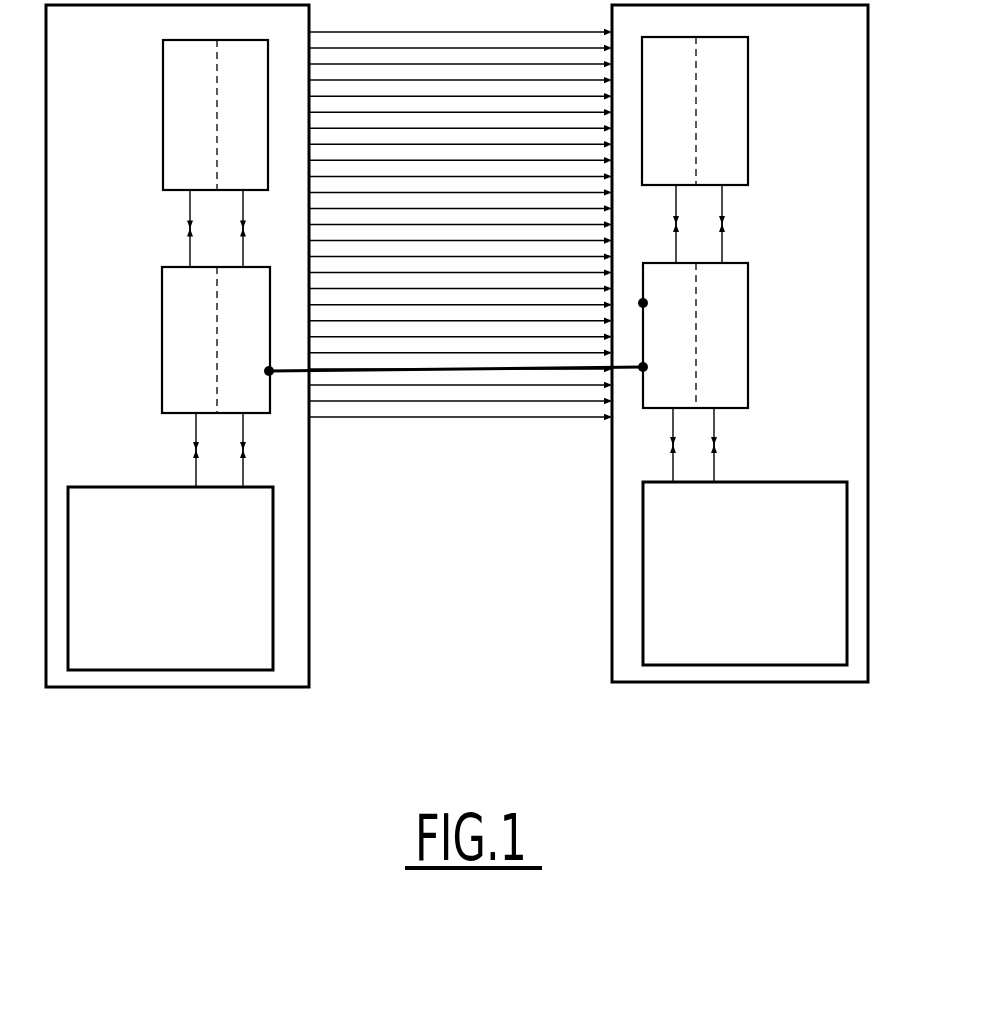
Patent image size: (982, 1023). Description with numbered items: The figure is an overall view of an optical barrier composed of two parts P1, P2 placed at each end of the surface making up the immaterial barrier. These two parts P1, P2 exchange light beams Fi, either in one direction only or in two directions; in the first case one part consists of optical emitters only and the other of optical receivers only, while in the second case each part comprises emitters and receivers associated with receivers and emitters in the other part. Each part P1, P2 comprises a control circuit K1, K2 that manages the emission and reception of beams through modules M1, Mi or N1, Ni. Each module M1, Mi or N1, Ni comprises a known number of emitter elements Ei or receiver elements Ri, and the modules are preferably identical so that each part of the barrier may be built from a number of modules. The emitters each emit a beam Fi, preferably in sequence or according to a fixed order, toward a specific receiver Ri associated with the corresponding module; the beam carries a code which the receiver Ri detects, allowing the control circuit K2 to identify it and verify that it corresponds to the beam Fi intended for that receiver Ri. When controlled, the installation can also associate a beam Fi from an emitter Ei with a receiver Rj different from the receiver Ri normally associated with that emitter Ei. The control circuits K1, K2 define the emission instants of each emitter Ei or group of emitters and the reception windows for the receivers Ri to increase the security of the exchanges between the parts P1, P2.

The first part of the optical barrier P1 is at (193, 687).
The second part of the optical barrier P2 is at (757, 682).
The module Mi is at (185, 118).
The module M1 is at (180, 372).
The control circuit K1 is at (210, 592).
The module Ni is at (732, 130).
The module N1 is at (737, 362).
The control circuit K2 is at (780, 587).
The emitter element Ei is at (453, 356).
The receiver element Ri is at (658, 367).
The receiver Rj is at (659, 305).
The light beam Fi is at (463, 376).